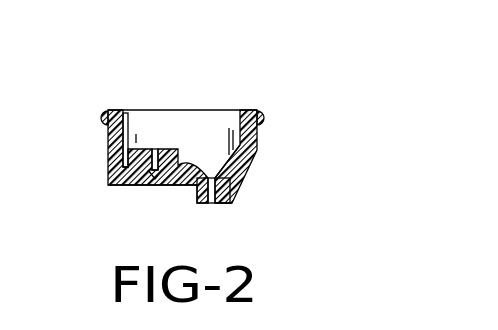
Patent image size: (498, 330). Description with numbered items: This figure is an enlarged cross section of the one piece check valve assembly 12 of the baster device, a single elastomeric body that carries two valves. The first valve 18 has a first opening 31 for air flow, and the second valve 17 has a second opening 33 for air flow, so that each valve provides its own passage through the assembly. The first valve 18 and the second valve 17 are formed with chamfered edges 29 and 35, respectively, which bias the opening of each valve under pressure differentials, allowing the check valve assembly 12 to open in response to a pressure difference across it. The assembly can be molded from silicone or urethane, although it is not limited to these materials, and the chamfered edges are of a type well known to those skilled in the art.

The one piece check valve assembly 12 is at (318, 110).
The second valve 17 is at (213, 203).
The first valve 18 is at (165, 147).
The chamfered edge 29 is at (224, 163).
The first opening 31 is at (148, 138).
The second opening 33 is at (150, 185).
The chamfered edge 35 is at (218, 206).